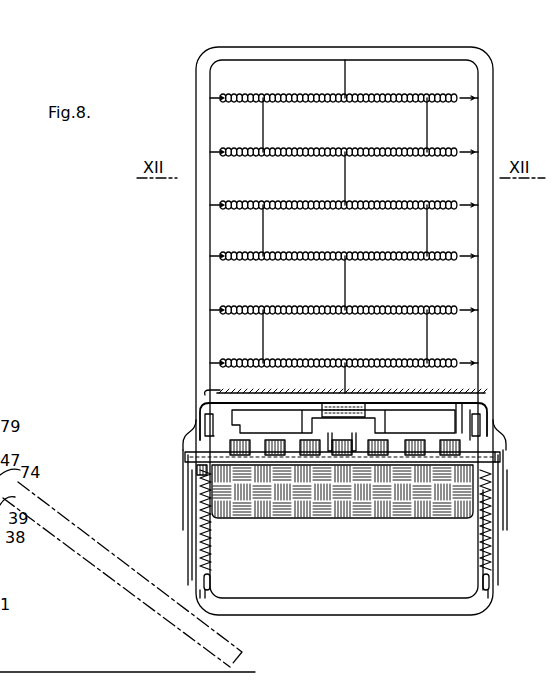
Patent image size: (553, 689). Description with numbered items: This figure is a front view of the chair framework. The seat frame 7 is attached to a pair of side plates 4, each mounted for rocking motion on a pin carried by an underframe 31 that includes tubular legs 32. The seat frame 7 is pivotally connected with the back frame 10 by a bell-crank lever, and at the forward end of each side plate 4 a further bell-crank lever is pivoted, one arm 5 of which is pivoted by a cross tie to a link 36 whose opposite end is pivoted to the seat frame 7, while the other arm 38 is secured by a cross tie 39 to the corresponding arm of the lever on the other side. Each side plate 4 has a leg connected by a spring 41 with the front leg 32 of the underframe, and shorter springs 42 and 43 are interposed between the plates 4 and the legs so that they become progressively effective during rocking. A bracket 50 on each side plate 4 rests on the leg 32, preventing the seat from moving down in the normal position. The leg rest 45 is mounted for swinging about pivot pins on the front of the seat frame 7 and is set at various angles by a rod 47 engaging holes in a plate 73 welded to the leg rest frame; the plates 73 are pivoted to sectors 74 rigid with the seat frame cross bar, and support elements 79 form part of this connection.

The back frame 10 is at (196, 227).
The tubular legs 32 is at (334, 608).
The seat frame 7 is at (419, 398).
The sectors 74 is at (462, 415).
The support elements 79 is at (460, 410).
The link 36 is at (203, 425).
The arm 5 is at (188, 437).
The cross tie 39 is at (188, 458).
The plate 73 is at (495, 452).
The rod 47 is at (253, 435).
The leg rest 45 is at (342, 504).
The spring 42 is at (197, 472).
The underframe 31 is at (205, 485).
The arm 38 is at (183, 505).
The side plates 4 is at (190, 536).
The bracket 50 is at (200, 548).
The spring 43 is at (208, 565).
The spring 41 is at (480, 563).